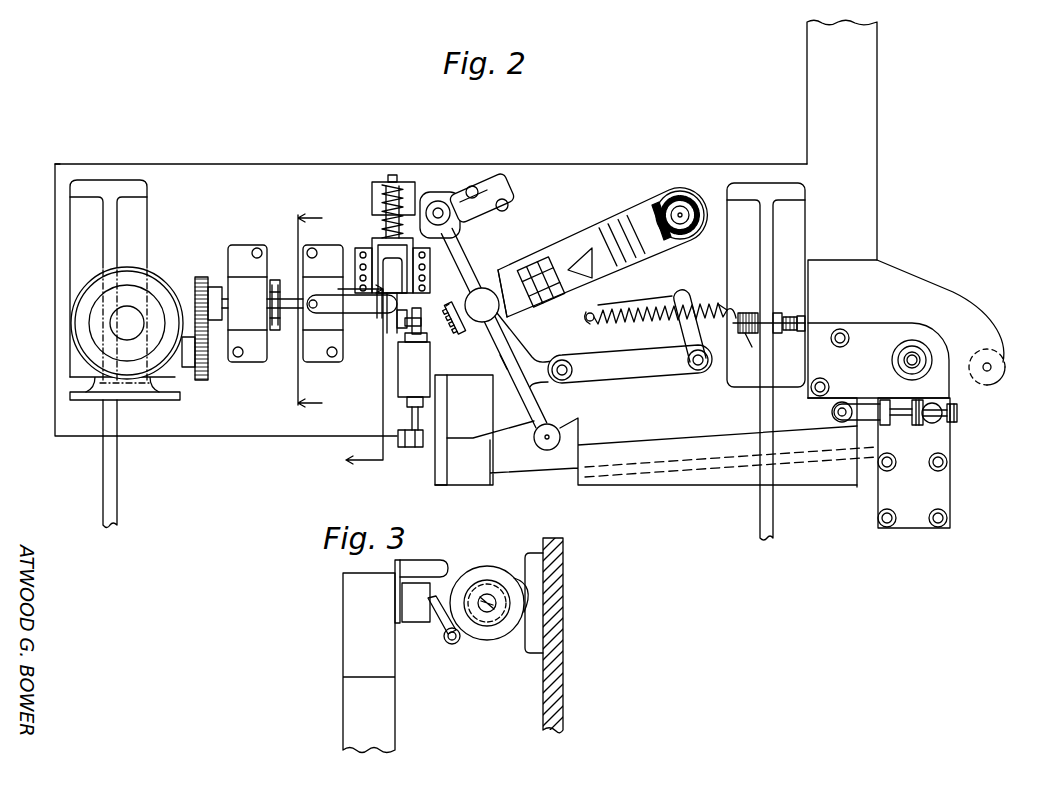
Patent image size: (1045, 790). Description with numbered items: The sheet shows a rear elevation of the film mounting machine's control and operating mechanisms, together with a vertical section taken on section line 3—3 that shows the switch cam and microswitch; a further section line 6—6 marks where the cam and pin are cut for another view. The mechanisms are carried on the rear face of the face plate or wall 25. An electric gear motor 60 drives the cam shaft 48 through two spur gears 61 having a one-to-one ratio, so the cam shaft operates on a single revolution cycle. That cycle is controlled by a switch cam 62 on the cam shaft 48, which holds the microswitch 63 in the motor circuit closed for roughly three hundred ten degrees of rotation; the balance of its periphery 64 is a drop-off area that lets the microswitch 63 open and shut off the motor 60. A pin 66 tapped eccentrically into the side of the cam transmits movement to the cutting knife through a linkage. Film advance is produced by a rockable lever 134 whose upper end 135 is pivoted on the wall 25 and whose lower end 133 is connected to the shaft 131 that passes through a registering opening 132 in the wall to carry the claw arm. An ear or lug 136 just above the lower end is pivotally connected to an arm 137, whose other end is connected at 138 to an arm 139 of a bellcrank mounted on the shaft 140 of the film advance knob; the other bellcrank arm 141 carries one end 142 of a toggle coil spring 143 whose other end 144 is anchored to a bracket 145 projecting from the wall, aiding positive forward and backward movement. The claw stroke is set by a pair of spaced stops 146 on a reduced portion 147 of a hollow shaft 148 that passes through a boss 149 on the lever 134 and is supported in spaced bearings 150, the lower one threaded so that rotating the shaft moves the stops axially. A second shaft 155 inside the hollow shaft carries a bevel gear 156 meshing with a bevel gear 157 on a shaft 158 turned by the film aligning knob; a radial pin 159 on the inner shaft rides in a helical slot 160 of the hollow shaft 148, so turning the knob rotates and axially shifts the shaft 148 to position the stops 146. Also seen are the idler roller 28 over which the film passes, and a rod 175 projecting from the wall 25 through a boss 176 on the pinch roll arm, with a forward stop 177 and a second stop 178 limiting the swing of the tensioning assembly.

In FIG. 2, the face plate or wall 25 is at (239, 211).
In FIG. 3, the face plate or wall 25 is at (560, 567).
In FIG. 2, the electric gear motor 60 is at (77, 322).
In FIG. 2, the spur gears 61 is at (195, 283).
In FIG. 2, the cam shaft 48 is at (225, 290).
In FIG. 3, the cam shaft 48 is at (487, 595).
In FIG. 2, the section line 3— 3 is at (316, 312).
In FIG. 2, the section line 6— 6 is at (352, 375).
In FIG. 2, the pin 66 is at (422, 318).
In FIG. 2, the upper end of lever 135 is at (443, 204).
In FIG. 2, the rockable lever 134 is at (519, 391).
In FIG. 2, the ear or lug 136 is at (522, 398).
In FIG. 2, the lower end of lever 133 is at (534, 437).
In FIG. 2, the stud or shaft 131 is at (562, 437).
In FIG. 2, the boss 149 is at (481, 289).
In FIG. 2, the stops 146 is at (515, 288).
In FIG. 2, the reduced portion 147 is at (465, 337).
In FIG. 2, the hollow shaft 148 is at (605, 250).
In FIG. 2, the radially extending pin 159 is at (580, 252).
In FIG. 2, the second shaft 155 is at (636, 228).
In FIG. 2, the bearings 150 is at (510, 312).
In FIG. 2, the helical slot 160 is at (621, 305).
In FIG. 2, the bevel gear 156 is at (665, 246).
In FIG. 2, the shaft 158 is at (682, 212).
In FIG. 2, the bevel gear 157 is at (704, 195).
In FIG. 2, the bellcrank shaft 140 is at (675, 295).
In FIG. 2, the end of coil spring 142 is at (592, 323).
In FIG. 2, the coil spring 143 is at (724, 305).
In FIG. 2, the bellcrank arm 141 is at (569, 331).
In FIG. 2, the arm 137 is at (634, 374).
In FIG. 2, the registering opening 132 is at (564, 381).
In FIG. 2, the connection 138 is at (690, 373).
In FIG. 2, the bellcrank arm 139 is at (711, 370).
In FIG. 2, the bracket 145 is at (800, 209).
In FIG. 2, the end of coil spring 144 is at (742, 308).
In FIG. 2, the idler roller 28 is at (997, 358).
In FIG. 2, the rod 175 is at (893, 425).
In FIG. 2, the forward stop 177 is at (845, 426).
In FIG. 2, the boss 176 is at (943, 420).
In FIG. 2, the second stop 178 is at (951, 408).
In FIG. 3, the microswitch 63 is at (376, 622).
In FIG. 3, the switch cam 62 is at (487, 641).
In FIG. 3, the drop-off periphery 64 is at (516, 580).